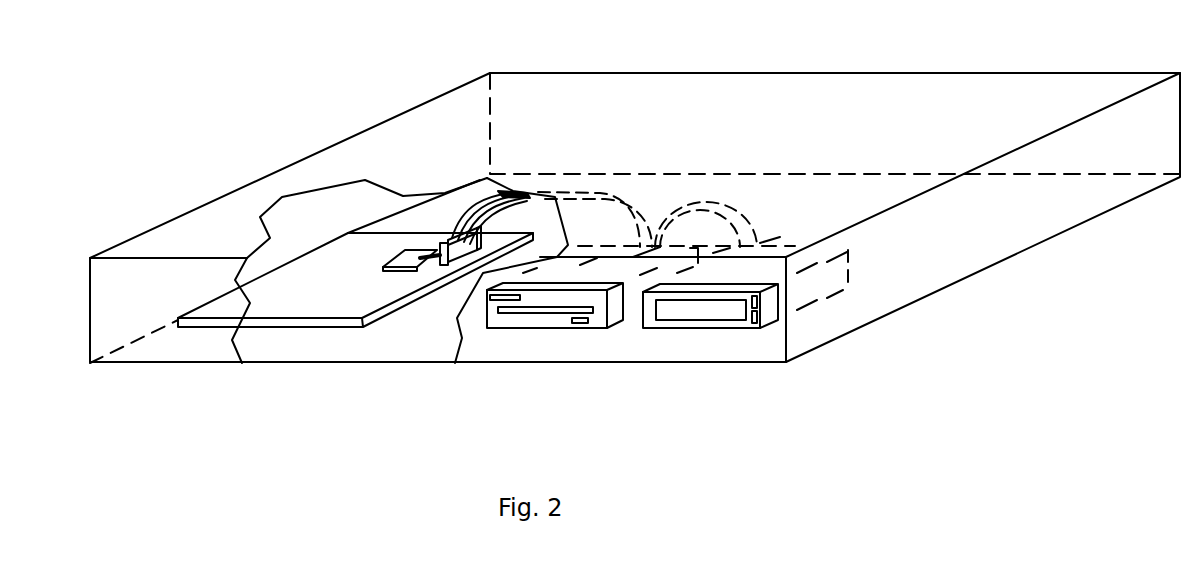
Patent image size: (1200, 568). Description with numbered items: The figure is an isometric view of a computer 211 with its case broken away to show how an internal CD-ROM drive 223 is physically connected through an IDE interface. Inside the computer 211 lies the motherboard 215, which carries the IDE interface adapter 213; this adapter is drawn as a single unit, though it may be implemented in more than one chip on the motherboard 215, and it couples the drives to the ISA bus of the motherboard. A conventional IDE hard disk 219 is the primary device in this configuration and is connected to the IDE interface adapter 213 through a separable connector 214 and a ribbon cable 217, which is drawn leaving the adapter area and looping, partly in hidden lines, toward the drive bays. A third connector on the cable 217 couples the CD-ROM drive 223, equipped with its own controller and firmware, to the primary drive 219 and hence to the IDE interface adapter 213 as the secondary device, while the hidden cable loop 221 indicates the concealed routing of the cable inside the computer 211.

The computer 211 is at (688, 73).
The IDE interface adapter 213 is at (412, 250).
The separable connector 214 is at (449, 262).
The motherboard 215 is at (325, 290).
The cable 217 is at (513, 193).
The IDE hard disk 219 is at (533, 322).
The cable loop 221 is at (687, 203).
The CD-ROM drive 223 is at (680, 323).